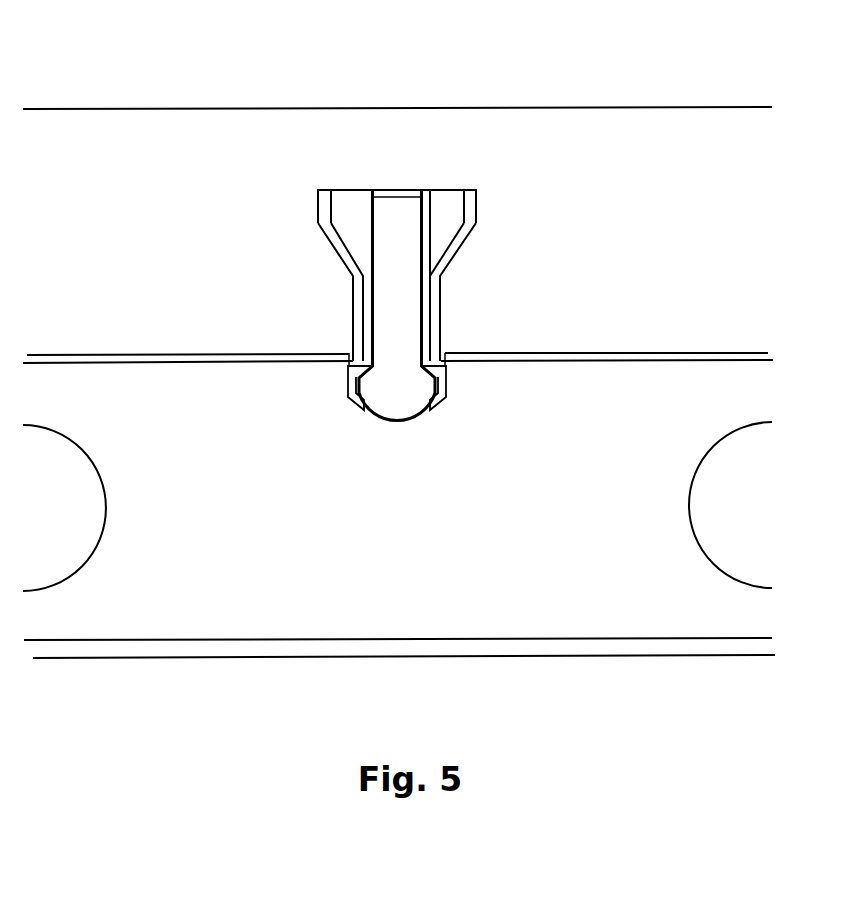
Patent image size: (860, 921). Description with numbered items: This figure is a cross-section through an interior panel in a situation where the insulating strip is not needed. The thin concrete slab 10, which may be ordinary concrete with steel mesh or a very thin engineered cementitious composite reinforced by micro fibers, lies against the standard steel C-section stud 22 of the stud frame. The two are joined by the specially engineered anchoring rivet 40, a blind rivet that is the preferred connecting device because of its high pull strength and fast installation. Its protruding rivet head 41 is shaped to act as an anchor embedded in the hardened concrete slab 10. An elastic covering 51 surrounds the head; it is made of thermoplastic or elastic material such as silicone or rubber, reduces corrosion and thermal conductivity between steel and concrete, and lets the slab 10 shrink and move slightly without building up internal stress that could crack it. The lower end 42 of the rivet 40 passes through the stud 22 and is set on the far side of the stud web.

The concrete slab 10 is at (608, 200).
The C-section stud 22 is at (564, 543).
The anchoring rivet 40 is at (354, 265).
The rivet head 41 is at (447, 202).
The clip tip 42 is at (392, 403).
The elastic covering 51 is at (327, 205).